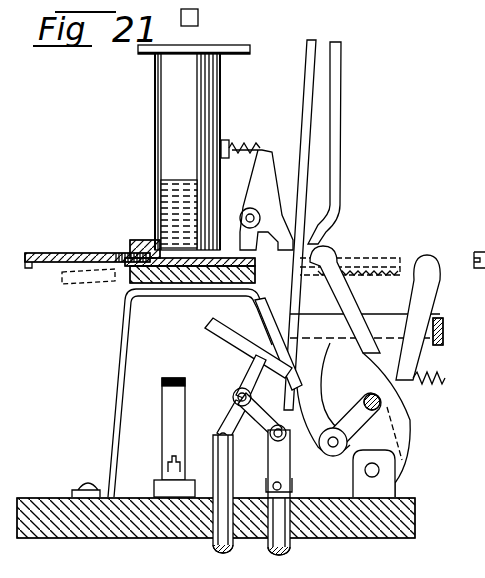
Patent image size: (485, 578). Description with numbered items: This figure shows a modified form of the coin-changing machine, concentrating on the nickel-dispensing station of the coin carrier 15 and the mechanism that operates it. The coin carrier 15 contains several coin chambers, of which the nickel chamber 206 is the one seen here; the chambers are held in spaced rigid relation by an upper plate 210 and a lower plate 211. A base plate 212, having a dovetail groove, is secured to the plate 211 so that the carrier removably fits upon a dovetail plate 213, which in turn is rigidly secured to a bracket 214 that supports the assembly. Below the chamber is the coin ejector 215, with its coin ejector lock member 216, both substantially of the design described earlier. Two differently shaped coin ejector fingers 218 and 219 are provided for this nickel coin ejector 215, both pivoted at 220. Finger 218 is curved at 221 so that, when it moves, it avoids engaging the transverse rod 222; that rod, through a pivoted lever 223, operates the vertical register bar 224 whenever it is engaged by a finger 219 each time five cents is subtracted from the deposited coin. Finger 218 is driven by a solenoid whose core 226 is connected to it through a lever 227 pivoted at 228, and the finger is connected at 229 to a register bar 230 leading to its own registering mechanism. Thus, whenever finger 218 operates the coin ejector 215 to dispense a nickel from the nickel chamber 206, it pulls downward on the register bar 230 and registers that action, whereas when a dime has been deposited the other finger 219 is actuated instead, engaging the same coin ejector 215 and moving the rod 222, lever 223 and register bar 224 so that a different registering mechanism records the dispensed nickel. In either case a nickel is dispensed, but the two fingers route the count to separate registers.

The coin carrier 15 is at (140, 175).
The nickel chamber 206 is at (215, 86).
The plate 210 is at (146, 56).
The plate 211 is at (135, 243).
The base plate 212 is at (122, 277).
The dovetail plate 213 is at (140, 296).
The bracket 214 is at (120, 352).
The coin ejector 215 is at (41, 252).
The coin ejector lock member 216 is at (258, 193).
The coin ejector finger 218 is at (343, 298).
The coin ejector finger 219 is at (436, 300).
The pivot 220 is at (380, 470).
The curve 221 is at (387, 432).
The transverse rod 222 is at (390, 407).
The pivoted lever 223 is at (352, 411).
The vertical register bar 224 is at (342, 100).
The core 226 is at (266, 547).
The lever 227 is at (268, 460).
The pivot 228 is at (270, 434).
The connection 229 is at (298, 384).
The register bar 230 is at (305, 140).